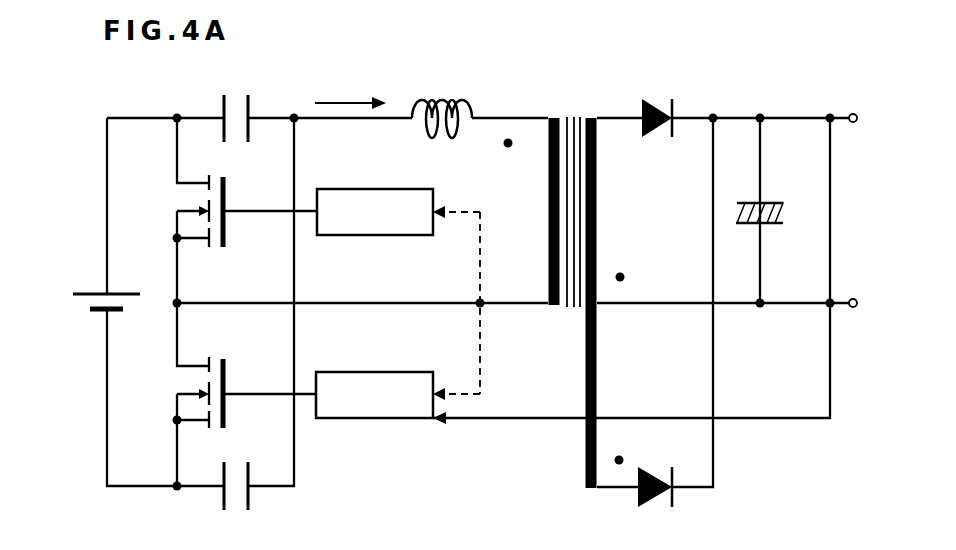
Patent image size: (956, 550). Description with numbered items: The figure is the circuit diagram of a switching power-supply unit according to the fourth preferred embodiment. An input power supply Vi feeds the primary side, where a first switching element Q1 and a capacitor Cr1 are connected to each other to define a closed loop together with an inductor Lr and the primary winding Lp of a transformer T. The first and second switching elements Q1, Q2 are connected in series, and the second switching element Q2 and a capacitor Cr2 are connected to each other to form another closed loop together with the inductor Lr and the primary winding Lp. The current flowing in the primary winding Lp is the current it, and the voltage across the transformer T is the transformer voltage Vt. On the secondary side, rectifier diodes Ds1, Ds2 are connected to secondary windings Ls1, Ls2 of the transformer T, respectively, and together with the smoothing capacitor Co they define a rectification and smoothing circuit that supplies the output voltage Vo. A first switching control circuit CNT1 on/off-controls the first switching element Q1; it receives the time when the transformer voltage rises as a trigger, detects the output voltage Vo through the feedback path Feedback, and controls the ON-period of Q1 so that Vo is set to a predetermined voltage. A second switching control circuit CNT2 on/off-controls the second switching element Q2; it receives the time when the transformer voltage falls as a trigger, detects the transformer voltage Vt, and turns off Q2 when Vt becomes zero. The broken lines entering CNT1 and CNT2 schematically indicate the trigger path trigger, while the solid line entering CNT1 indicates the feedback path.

The input power supply Vi is at (90, 300).
The capacitor Cr1 is at (236, 500).
The capacitor Cr2 is at (234, 105).
The first switching element Q1 is at (221, 392).
The second switching element Q2 is at (221, 212).
The first switching control circuit CNT1 is at (374, 395).
The second switching control circuit CNT2 is at (375, 212).
The trigger path trigger is at (498, 303).
The feedback path Feedback is at (651, 432).
The current flowing in the primary winding it is at (350, 86).
The inductor Lr is at (442, 101).
The transformer T is at (574, 110).
The primary winding Lp is at (550, 170).
The transformer voltage Vt is at (519, 224).
The secondary winding Ls1 is at (616, 210).
The secondary winding Ls2 is at (615, 395).
The rectifier diode Ds1 is at (660, 100).
The rectifier diode Ds2 is at (657, 505).
The smoothing capacitor Co is at (756, 217).
The output voltage Vo is at (809, 198).